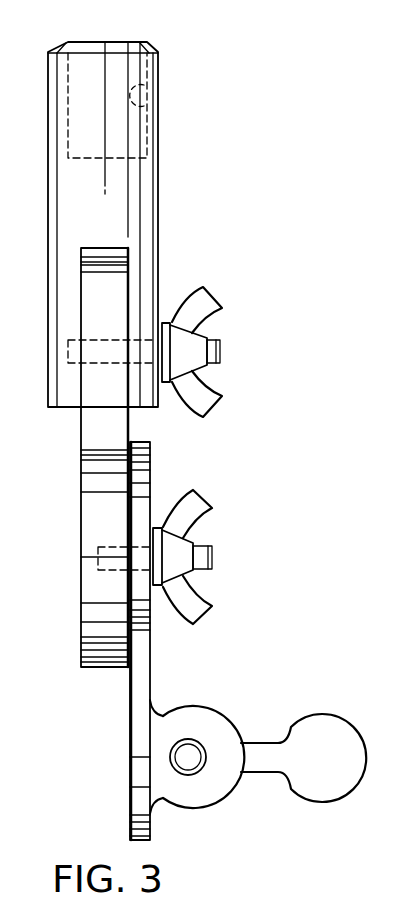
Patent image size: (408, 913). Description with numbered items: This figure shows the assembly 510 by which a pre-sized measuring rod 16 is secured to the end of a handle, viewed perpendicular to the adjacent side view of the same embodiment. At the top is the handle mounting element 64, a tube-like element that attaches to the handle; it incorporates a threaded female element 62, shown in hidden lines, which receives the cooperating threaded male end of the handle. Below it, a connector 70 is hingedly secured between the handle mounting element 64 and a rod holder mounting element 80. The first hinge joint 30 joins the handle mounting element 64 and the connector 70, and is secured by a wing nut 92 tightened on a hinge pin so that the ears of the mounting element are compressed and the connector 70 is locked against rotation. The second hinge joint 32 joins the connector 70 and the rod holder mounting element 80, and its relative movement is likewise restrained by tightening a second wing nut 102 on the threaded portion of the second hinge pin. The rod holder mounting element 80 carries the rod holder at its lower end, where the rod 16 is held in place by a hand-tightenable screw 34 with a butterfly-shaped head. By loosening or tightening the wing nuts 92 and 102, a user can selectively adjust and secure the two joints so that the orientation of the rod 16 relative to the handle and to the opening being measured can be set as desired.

The first hinge joint 30 is at (184, 232).
The assembly for securing rod to handle 510 is at (175, 52).
The handle mounting element 64 is at (162, 132).
The threaded female element 62 is at (163, 92).
The wing nut 92 is at (212, 302).
The second hinge joint 32 is at (64, 582).
The connector 70 is at (95, 510).
The rod holder mounting element 80 is at (151, 456).
The wing nut 102 is at (203, 521).
The screw 34 is at (333, 788).
The rod 16 is at (190, 758).